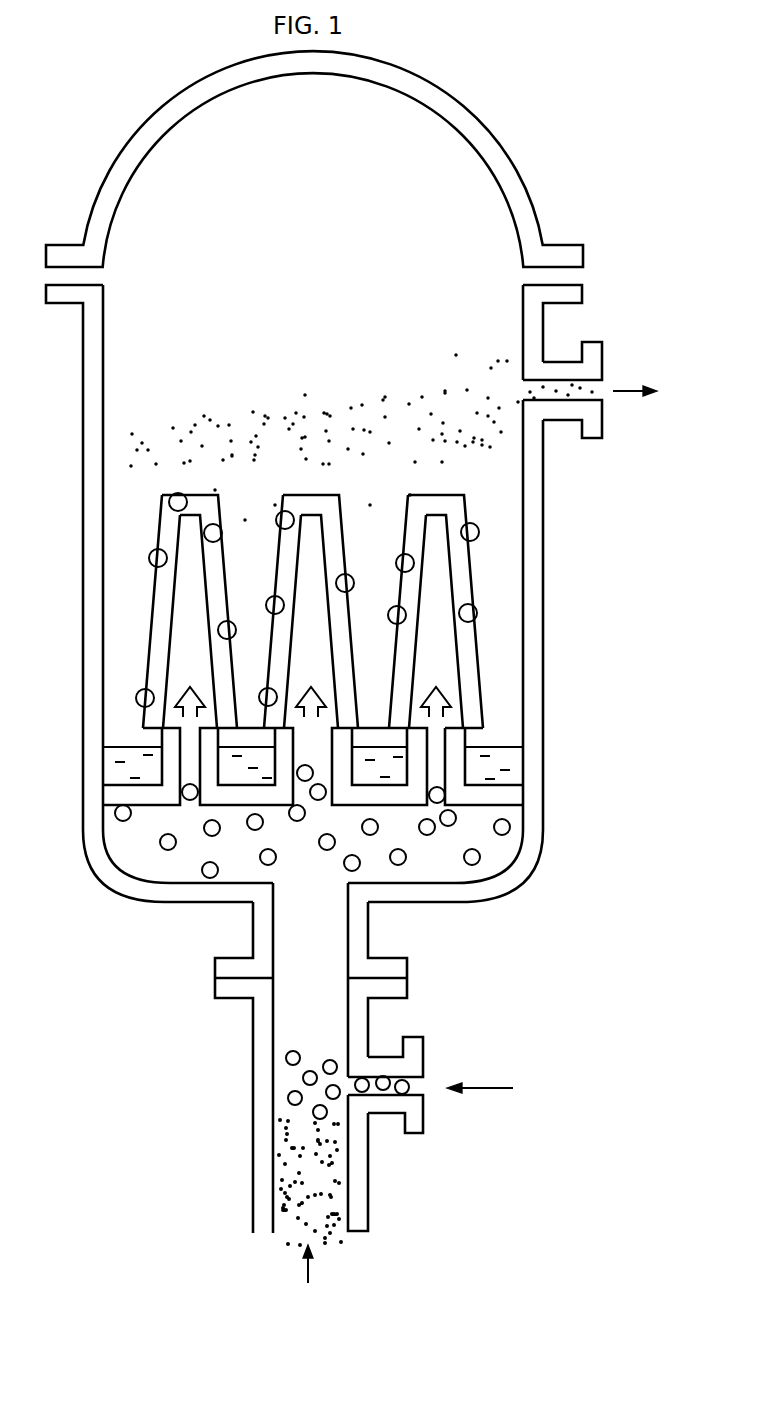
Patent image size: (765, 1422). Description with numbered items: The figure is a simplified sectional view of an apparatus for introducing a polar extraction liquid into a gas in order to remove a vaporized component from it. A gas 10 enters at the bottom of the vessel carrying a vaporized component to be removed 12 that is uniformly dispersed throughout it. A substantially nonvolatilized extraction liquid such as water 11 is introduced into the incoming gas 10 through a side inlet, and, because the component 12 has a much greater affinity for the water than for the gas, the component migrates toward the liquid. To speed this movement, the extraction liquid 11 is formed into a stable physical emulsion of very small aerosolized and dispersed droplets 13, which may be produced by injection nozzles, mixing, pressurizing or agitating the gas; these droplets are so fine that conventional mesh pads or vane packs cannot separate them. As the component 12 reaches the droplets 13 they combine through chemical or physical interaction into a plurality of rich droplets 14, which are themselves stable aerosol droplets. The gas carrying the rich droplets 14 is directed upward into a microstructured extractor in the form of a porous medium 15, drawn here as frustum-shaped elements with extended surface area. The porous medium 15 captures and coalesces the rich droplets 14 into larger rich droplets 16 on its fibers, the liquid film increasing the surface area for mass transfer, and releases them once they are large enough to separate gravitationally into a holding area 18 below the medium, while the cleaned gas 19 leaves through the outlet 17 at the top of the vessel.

The gas 10 is at (307, 1231).
The extraction liquid 11 is at (449, 1085).
The vaporized component to be removed 12 is at (312, 1182).
The aerosolized dispersed droplets 13 is at (313, 1060).
The rich droplets 14 is at (503, 848).
The porous medium 15 is at (478, 648).
The larger rich droplets 16 is at (479, 531).
The outlet 17 is at (610, 373).
The holding area 18 is at (508, 765).
The gas 19 is at (498, 438).